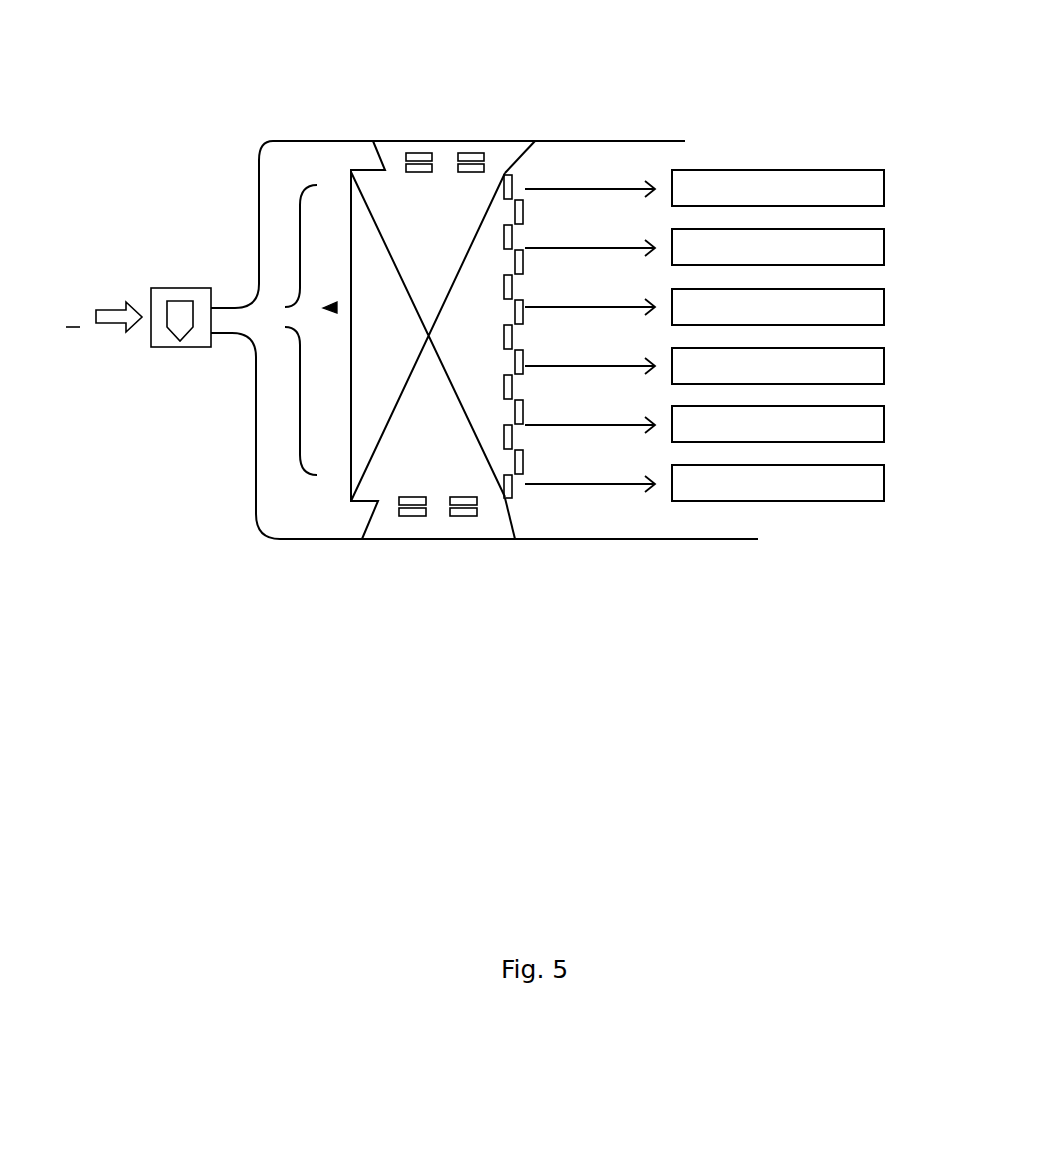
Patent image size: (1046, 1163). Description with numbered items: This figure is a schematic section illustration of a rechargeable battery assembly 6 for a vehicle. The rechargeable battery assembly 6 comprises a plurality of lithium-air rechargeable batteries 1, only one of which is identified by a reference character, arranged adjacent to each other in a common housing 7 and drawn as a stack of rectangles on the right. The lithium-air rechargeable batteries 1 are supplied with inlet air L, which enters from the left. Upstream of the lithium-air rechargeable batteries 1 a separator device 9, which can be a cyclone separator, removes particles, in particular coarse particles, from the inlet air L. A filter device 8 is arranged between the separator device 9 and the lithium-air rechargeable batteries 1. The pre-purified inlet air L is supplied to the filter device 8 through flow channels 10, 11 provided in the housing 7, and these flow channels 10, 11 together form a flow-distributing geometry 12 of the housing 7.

The lithium-air rechargeable battery 1 is at (852, 371).
The rechargeable battery assembly 6 is at (683, 96).
The common housing 7 is at (615, 539).
The filter device 8 is at (415, 480).
The separator device 9 is at (162, 348).
The flow channel 10 is at (285, 493).
The flow channel 11 is at (274, 223).
The flow-distributing geometry 12 is at (335, 307).